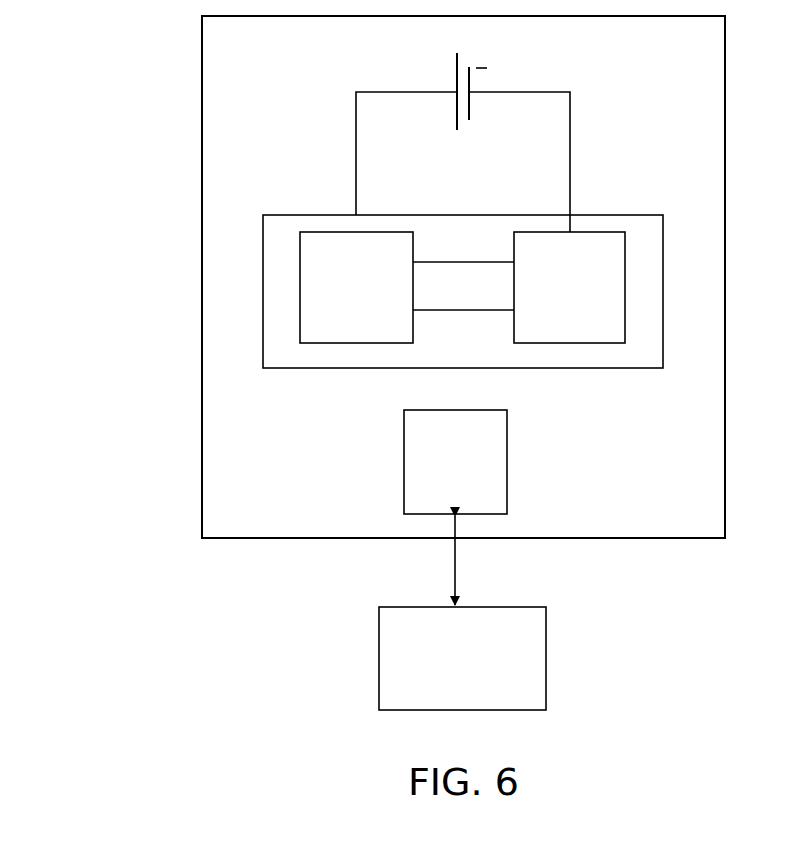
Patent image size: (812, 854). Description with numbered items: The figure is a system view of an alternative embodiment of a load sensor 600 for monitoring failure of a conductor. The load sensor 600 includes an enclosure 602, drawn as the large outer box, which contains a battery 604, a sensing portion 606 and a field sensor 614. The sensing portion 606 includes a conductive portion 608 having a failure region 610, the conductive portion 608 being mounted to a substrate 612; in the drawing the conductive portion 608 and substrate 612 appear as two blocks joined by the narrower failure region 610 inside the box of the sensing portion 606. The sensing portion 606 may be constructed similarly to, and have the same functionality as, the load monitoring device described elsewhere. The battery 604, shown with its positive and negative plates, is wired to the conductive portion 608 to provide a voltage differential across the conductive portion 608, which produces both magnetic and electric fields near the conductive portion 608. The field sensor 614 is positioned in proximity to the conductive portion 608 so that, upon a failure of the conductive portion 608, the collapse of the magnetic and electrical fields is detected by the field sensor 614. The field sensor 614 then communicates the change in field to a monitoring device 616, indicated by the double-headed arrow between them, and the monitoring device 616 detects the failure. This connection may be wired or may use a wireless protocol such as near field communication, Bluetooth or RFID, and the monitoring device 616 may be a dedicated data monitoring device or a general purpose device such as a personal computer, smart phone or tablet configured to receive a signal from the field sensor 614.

The load sensor 600 is at (174, 84).
The enclosure 602 is at (725, 123).
The battery 604 is at (472, 92).
The sensing portion 606 is at (296, 214).
The conductive portion 608 is at (327, 343).
The failure region 610 is at (447, 311).
The substrate 612 is at (586, 368).
The field sensor 614 is at (507, 458).
The monitoring device 616 is at (546, 655).